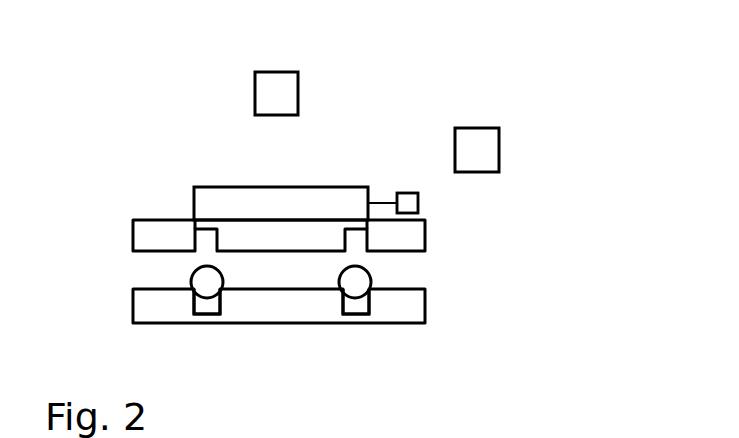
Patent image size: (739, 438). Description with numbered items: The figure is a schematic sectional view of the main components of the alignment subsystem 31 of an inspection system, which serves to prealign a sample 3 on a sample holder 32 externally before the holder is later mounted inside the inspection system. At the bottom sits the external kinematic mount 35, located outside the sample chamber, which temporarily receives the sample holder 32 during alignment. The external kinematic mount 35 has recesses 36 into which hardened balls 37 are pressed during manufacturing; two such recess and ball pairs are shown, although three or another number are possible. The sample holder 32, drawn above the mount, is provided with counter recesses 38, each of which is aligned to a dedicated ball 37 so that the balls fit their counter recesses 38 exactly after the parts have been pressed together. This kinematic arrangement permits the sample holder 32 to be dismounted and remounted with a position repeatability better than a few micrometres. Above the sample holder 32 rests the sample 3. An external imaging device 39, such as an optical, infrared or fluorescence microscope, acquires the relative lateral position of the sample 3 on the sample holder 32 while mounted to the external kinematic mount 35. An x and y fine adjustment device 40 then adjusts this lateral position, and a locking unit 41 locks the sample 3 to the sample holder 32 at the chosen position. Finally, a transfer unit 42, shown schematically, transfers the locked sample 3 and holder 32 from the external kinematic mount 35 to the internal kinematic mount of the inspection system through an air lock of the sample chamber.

The alignment subsystem 31 is at (374, 94).
The external imaging device 39 is at (264, 94).
The transfer unit 42 is at (490, 152).
The sample 3 is at (202, 207).
The x and y fine adjustment device 40 is at (418, 203).
The locking unit 41 is at (493, 218).
The sample holder 32 is at (145, 238).
The counter recesses 38 is at (353, 232).
The external kinematic mount 35 is at (142, 304).
The recesses 36 is at (212, 308).
The hardened balls 37 is at (202, 282).